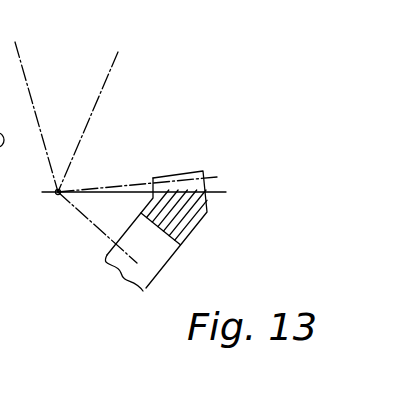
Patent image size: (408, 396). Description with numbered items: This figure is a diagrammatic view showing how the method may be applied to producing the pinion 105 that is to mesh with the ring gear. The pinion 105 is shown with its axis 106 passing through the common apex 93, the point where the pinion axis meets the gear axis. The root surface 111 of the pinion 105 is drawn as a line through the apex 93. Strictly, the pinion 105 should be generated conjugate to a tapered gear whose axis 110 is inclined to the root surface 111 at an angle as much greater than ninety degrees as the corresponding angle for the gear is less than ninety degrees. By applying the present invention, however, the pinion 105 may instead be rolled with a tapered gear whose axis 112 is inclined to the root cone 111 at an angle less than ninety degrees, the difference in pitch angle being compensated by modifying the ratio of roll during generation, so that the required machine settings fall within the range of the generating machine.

The common apex 93 is at (56, 194).
The pinion 105 is at (183, 234).
The axis of the pinion 106 is at (100, 229).
The axis of tapered gear 110 is at (27, 78).
The root surface of the pinion 111 is at (213, 192).
The axis of tapered gear with pitch cone angle less than ninety degrees 112 is at (90, 117).